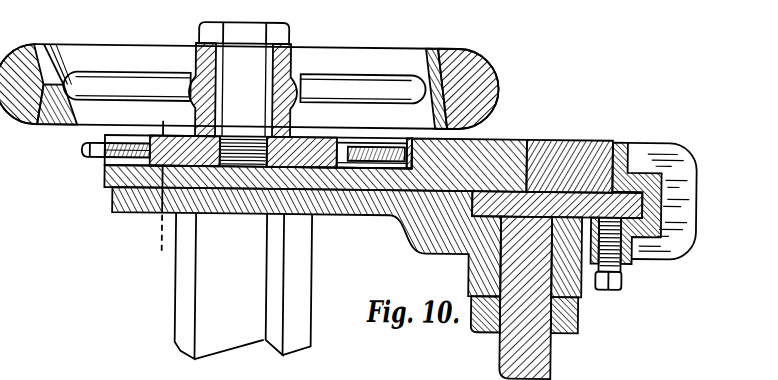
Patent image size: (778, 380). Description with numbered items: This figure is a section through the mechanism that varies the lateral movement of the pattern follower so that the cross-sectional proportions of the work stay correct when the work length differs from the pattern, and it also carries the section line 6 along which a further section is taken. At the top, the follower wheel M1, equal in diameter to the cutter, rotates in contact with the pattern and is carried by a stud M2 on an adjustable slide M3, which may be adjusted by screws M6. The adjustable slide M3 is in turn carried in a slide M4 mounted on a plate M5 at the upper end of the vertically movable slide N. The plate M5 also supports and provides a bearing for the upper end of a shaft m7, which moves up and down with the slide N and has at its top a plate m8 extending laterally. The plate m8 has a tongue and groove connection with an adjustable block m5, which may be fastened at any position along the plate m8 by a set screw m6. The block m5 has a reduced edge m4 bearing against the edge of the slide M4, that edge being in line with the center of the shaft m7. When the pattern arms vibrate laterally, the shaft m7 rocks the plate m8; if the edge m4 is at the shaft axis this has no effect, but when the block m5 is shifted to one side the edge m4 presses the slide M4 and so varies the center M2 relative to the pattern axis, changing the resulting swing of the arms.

The follower wheel M1 is at (480, 87).
The stud M2 is at (248, 67).
The adjustable slide M3 is at (317, 140).
The slide M4 is at (105, 173).
The plate M5 is at (133, 196).
The screws M6 is at (82, 152).
The slide N is at (247, 258).
The reduced edge m4 is at (570, 127).
The adjustable block m5 is at (638, 152).
The set screw m6 is at (613, 282).
The shaft m7 is at (553, 347).
The plate m8 is at (627, 208).
The line 6— 6 is at (160, 191).